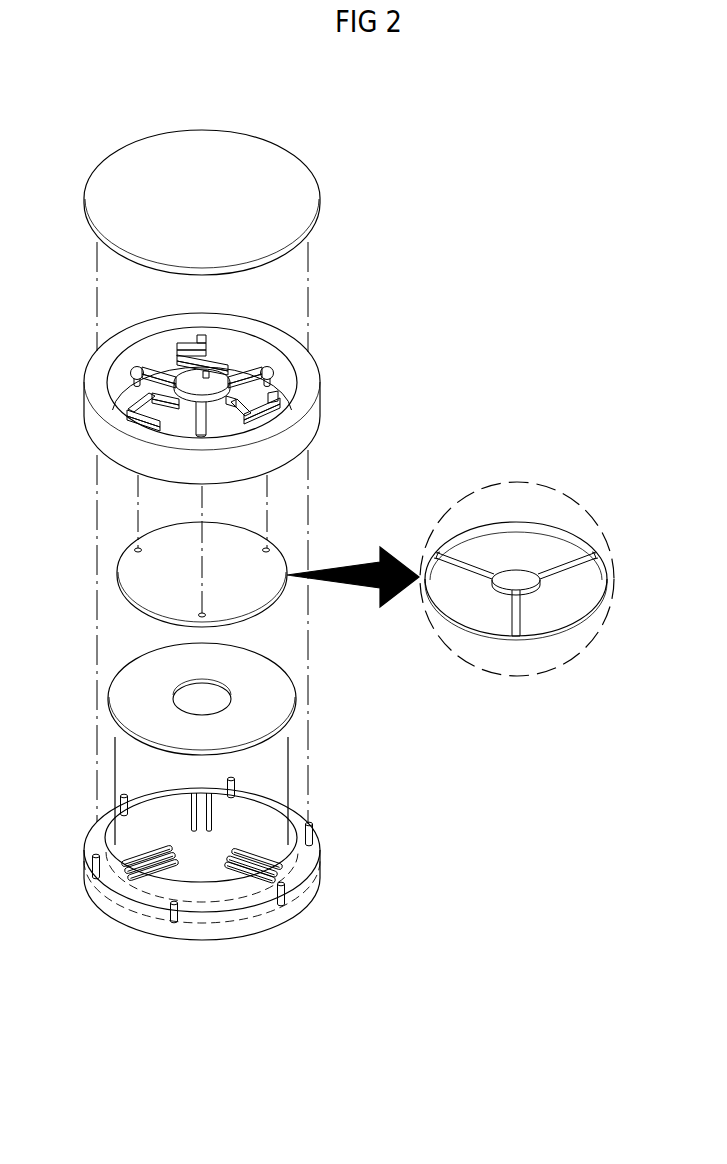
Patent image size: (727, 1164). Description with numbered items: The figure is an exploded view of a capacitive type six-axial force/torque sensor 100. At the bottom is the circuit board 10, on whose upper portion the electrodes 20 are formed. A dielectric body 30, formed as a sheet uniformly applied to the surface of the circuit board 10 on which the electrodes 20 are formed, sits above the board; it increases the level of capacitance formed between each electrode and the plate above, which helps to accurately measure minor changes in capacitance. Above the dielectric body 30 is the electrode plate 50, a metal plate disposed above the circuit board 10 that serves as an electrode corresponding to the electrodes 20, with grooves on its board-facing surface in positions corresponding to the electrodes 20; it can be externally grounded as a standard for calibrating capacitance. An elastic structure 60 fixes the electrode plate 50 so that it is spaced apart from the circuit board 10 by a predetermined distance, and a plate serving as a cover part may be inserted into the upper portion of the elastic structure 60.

The capacitive type 6-axial force/torque sensor 100 is at (62, 120).
The elastic structure 60 is at (320, 408).
The electrode plate 50 is at (272, 560).
The dielectric body 30 is at (283, 698).
The circuit board 10 is at (292, 852).
The electrodes 20 is at (253, 872).